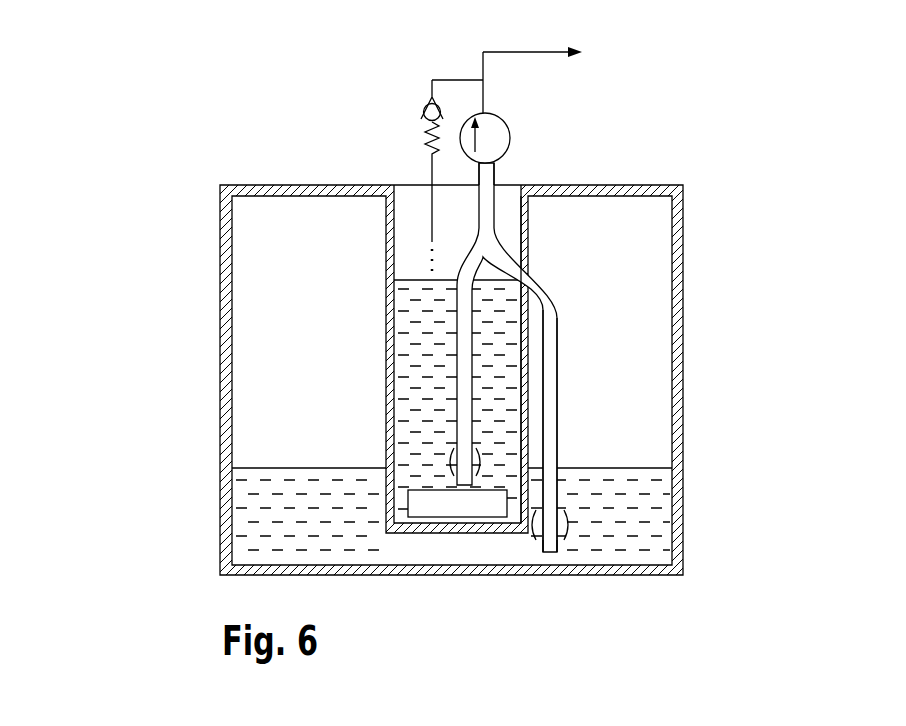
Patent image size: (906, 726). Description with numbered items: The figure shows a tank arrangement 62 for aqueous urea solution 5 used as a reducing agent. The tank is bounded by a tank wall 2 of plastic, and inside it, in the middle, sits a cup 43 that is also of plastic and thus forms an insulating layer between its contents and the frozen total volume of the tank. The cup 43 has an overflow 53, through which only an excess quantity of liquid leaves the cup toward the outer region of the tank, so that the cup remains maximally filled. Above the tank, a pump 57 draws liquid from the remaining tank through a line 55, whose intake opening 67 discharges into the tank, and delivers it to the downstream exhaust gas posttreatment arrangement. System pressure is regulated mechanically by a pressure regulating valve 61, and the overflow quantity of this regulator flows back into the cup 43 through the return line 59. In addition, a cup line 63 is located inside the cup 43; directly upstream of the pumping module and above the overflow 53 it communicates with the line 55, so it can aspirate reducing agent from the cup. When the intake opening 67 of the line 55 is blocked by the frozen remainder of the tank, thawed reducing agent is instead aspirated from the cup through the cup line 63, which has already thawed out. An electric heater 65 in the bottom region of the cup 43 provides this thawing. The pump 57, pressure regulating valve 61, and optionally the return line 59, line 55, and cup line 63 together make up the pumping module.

The tank wall 2 is at (678, 373).
The aqueous urea solution 5 is at (658, 497).
The cup 43 is at (386, 328).
The overflow 53 is at (523, 261).
The line 55 is at (552, 330).
The pump 57 is at (510, 137).
The return line 59 is at (443, 78).
The pressure regulating valve 61 is at (428, 136).
The tank arrangement 62 is at (168, 241).
The cup line 63 is at (460, 393).
The electric heater 65 is at (448, 507).
The intake opening 67 is at (553, 543).